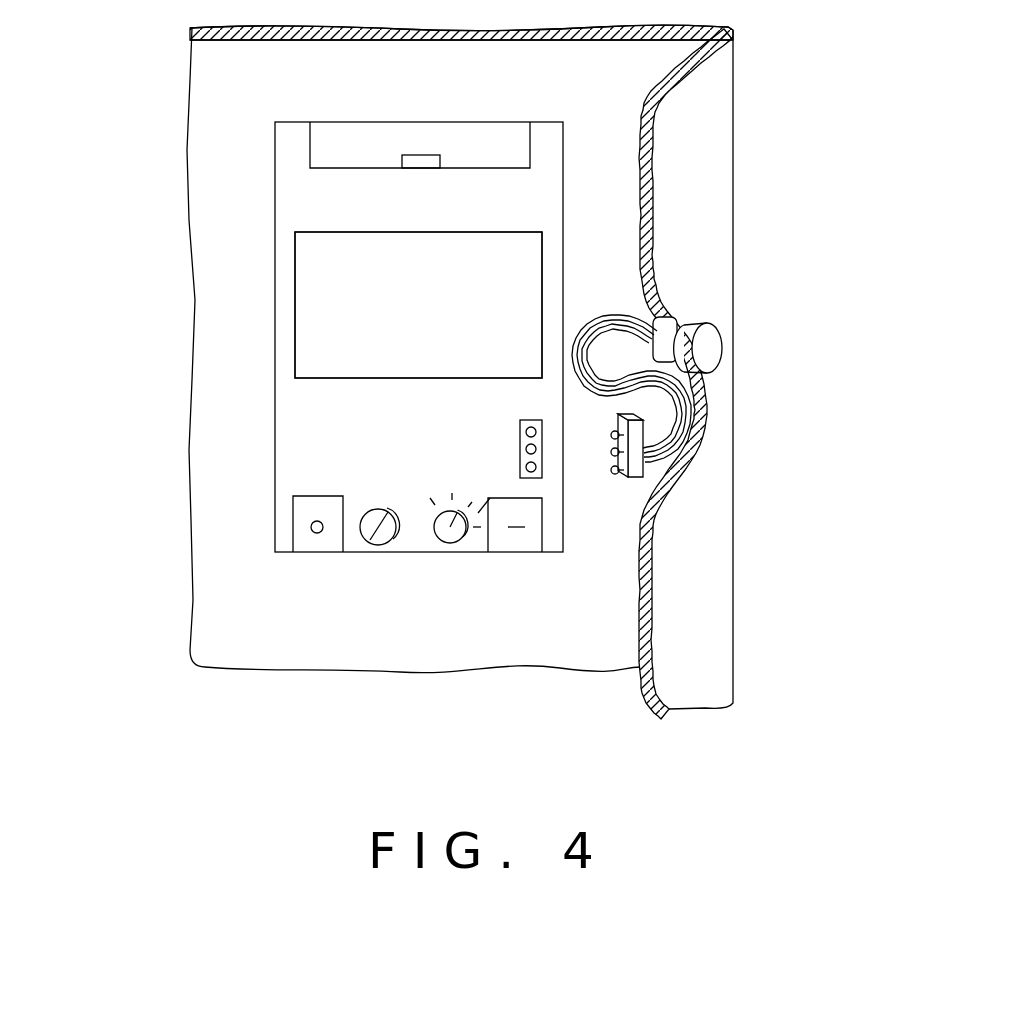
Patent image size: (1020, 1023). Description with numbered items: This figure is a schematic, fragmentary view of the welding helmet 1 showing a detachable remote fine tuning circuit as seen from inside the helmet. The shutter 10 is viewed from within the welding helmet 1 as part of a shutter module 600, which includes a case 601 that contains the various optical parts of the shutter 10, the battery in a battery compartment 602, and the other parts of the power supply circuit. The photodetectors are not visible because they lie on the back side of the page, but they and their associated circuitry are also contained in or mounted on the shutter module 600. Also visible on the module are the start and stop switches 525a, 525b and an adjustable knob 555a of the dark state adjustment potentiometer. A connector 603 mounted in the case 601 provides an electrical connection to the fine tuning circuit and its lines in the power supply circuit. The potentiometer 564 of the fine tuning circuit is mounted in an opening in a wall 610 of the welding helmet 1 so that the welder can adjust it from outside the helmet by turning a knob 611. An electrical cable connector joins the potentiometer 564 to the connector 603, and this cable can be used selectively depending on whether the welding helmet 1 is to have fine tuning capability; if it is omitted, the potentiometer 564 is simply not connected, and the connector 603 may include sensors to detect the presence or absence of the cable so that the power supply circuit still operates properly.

The welding helmet 1 is at (158, 152).
The shutter 10 is at (324, 346).
The shutter module 600 is at (263, 243).
The case 601 is at (323, 305).
The battery compartment 602 is at (325, 135).
The connector 603 is at (520, 443).
The start switch 525a is at (317, 535).
The stop switch 525b is at (525, 535).
The adjustable knob 555a is at (467, 541).
The potentiometer 564 is at (690, 320).
The wall 610 is at (685, 243).
The knob 611 is at (712, 352).